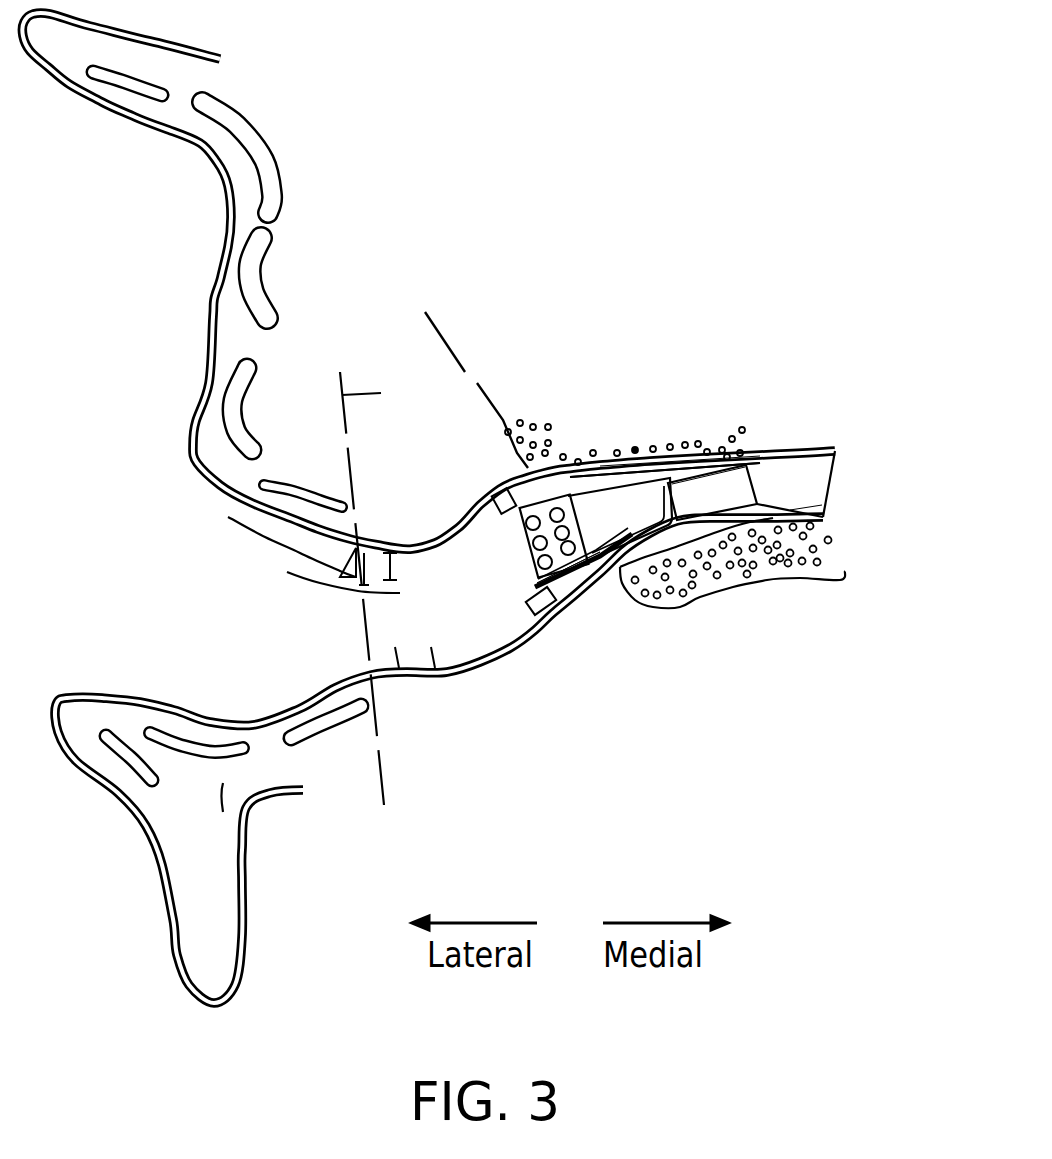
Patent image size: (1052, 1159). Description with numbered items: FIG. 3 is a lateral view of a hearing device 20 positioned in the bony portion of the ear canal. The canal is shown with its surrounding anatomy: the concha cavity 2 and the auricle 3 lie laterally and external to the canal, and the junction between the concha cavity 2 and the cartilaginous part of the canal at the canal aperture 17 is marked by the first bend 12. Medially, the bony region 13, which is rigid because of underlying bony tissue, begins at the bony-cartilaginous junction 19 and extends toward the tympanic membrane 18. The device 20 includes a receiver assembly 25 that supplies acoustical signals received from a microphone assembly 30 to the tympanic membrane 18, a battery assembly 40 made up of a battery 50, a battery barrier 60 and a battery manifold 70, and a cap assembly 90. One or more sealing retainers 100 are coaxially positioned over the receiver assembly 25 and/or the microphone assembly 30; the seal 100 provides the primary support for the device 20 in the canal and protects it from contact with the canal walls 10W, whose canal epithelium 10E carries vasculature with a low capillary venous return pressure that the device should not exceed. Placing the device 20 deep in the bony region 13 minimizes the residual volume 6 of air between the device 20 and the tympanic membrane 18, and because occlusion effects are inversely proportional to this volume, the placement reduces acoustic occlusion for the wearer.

The concha cavity 2 is at (184, 614).
The auricle 3 is at (125, 125).
The residual volume 6 is at (813, 500).
The canal wall 10W is at (623, 646).
The canal epithelium 10E is at (588, 626).
The first bend 12 is at (342, 395).
The bony region 13 is at (843, 587).
The canal aperture 17 is at (312, 604).
The tympanic membrane 18 is at (828, 480).
The bony-cartilaginous junction 19 is at (457, 348).
The hearing device 20 is at (760, 486).
The receiver assembly 25 is at (703, 493).
The microphone assembly 30 is at (533, 580).
The battery assembly 40 is at (589, 505).
The battery 50 is at (665, 414).
The battery barrier 60 is at (665, 431).
The battery manifold 70 is at (633, 500).
The cap assembly 90 is at (520, 524).
The sealing retainer 100 is at (498, 488).